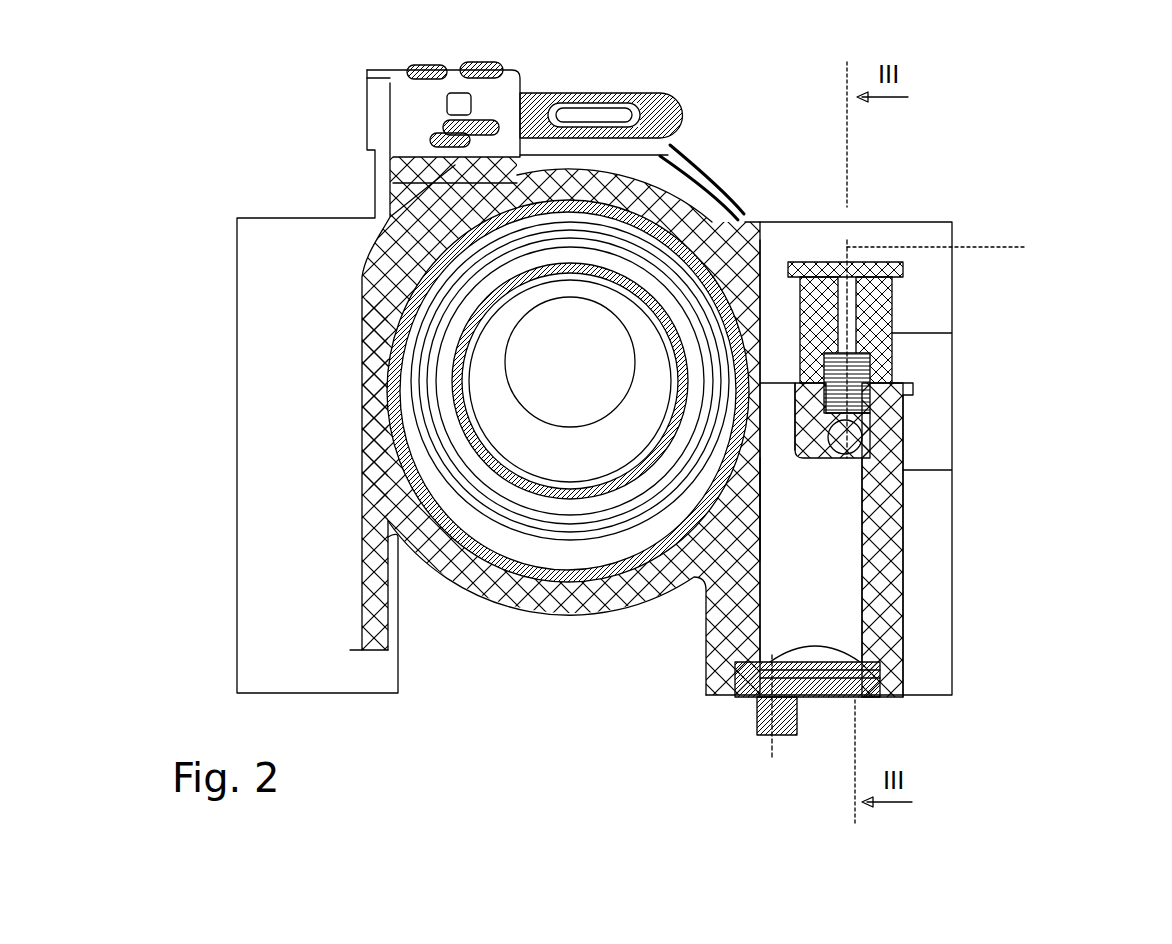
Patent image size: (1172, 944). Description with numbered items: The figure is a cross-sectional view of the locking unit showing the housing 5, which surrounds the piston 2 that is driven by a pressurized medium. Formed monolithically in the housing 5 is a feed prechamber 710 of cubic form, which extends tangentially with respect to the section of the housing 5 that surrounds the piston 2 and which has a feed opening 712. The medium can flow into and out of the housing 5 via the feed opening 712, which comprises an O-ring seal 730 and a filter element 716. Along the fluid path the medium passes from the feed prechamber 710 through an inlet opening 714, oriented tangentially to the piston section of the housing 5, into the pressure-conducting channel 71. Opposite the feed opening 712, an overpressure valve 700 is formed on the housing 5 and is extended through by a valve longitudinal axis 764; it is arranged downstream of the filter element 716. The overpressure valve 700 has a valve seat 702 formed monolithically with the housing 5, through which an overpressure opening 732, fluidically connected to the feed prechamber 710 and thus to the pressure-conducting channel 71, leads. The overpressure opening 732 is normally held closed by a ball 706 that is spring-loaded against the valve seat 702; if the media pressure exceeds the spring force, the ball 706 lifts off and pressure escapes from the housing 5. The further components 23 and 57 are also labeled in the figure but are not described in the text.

The piston 2 is at (373, 197).
The housing 5 is at (707, 657).
The bearing and seal arrangement 23 is at (580, 570).
The retaining clip 57 is at (700, 207).
The pressure-conducting channel 71 is at (763, 300).
The overpressure valve 700 is at (876, 508).
The valve seat 702 is at (865, 440).
The ball 706 is at (912, 408).
The feed prechamber 710 is at (912, 542).
The feed opening 712 is at (852, 700).
The inlet opening 714 is at (755, 443).
The filter element 716 is at (860, 655).
The O-ring seal 730 is at (760, 702).
The overpressure opening 732 is at (845, 458).
The valve longitudinal axis 764 is at (1027, 247).